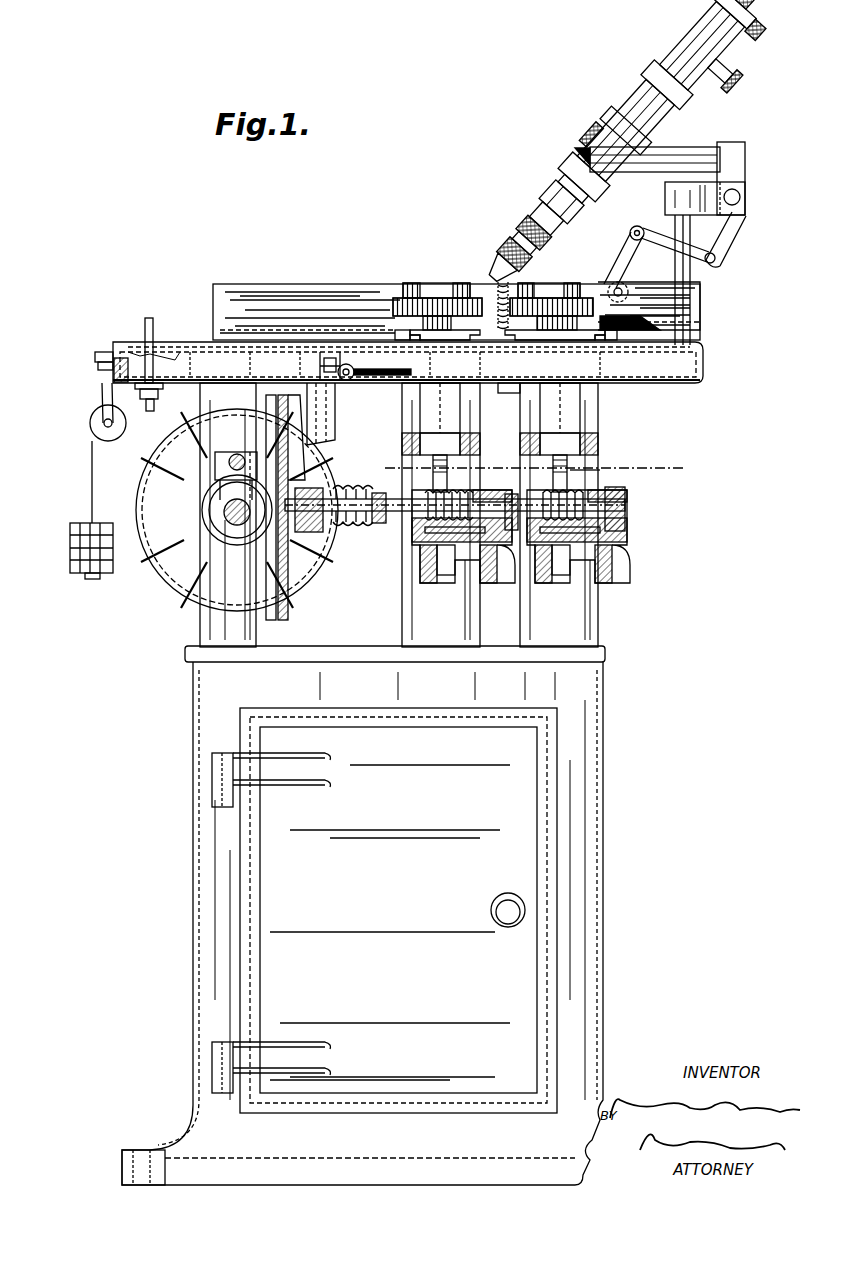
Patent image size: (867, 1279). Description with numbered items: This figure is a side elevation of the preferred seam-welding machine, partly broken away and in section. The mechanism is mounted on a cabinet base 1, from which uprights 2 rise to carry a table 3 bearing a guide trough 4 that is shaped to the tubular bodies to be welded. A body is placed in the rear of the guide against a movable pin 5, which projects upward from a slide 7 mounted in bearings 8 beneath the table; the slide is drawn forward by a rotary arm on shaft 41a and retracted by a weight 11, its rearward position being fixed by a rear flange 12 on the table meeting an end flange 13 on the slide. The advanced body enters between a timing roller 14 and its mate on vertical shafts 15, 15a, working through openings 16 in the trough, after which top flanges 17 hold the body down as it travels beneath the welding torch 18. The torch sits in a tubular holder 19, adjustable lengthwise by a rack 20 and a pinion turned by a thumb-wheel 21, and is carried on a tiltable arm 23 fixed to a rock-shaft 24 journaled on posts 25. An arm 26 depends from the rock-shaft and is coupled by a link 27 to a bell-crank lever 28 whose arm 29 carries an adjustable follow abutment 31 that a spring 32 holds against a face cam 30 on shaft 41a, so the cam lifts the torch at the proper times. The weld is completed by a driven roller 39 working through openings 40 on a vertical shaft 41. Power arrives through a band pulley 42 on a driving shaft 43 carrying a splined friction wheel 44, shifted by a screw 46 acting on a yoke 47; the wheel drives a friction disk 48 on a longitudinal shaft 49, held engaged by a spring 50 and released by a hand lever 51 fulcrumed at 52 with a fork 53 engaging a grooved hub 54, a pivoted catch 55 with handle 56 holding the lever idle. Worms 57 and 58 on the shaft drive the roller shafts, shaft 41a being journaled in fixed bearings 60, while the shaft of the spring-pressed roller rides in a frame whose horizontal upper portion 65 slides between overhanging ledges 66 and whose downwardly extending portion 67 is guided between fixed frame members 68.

The cabinet base 1 is at (605, 803).
The uprights 2 is at (207, 640).
The table 3 is at (196, 342).
The guide trough 4 is at (316, 285).
The movable pin 5 is at (148, 316).
The slide 7 is at (180, 388).
The bearings 8 is at (245, 378).
The weight 11 is at (75, 560).
The rear flange 12 is at (110, 380).
The end flange 13 is at (100, 410).
The roller 14 is at (395, 303).
The vertical shaft 15 is at (425, 458).
The openings 16 is at (422, 298).
The top flanges 17 is at (401, 283).
The welding torch 18 is at (647, 90).
The tubular holder 19 is at (612, 122).
The rack 20 is at (680, 124).
The thumb-wheel 21 is at (592, 135).
The tiltable arm 23 is at (660, 165).
The rock-shaft 24 is at (745, 215).
The posts 25 is at (690, 265).
The arm 26 is at (726, 232).
The link 27 is at (660, 230).
The bell-crank lever 28 is at (622, 250).
The arm 29 is at (570, 283).
The face cam 30 is at (532, 284).
The adjustable follow abutment 31 is at (548, 255).
The spring 32 is at (494, 345).
The driven roller 39 is at (605, 325).
The openings 40 is at (590, 296).
The vertical shaft 41 is at (585, 458).
The vertical shaft 41a is at (590, 470).
The band pulley 42 is at (168, 585).
The driving shaft 43 is at (237, 526).
The friction wheel 44 is at (202, 522).
The screw 46 is at (227, 461).
The yoke 47 is at (222, 478).
The friction disk 48 is at (290, 600).
The longitudinal shaft 49 is at (428, 530).
The spring 50 is at (372, 520).
The hand lever 51 is at (333, 395).
The fulcrum 52 is at (333, 410).
The fork 53 is at (333, 455).
The grooved hub 54 is at (325, 538).
The pivoted catch 55 is at (319, 364).
The handle 56 is at (393, 372).
The worm 57 is at (432, 548).
The worm 58 is at (628, 540).
The fixed bearings 60 is at (465, 584).
The horizontal upper portion 65 is at (441, 343).
The overhanging ledges 66 is at (395, 333).
The downwardly extending portion 67 is at (500, 419).
The fixed frame members 68 is at (470, 450).